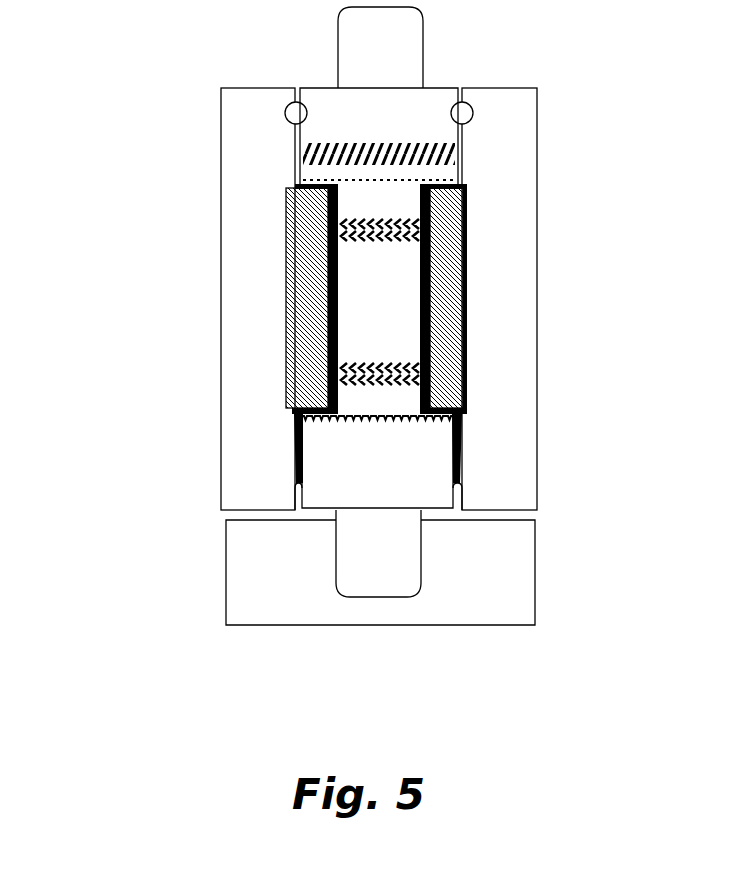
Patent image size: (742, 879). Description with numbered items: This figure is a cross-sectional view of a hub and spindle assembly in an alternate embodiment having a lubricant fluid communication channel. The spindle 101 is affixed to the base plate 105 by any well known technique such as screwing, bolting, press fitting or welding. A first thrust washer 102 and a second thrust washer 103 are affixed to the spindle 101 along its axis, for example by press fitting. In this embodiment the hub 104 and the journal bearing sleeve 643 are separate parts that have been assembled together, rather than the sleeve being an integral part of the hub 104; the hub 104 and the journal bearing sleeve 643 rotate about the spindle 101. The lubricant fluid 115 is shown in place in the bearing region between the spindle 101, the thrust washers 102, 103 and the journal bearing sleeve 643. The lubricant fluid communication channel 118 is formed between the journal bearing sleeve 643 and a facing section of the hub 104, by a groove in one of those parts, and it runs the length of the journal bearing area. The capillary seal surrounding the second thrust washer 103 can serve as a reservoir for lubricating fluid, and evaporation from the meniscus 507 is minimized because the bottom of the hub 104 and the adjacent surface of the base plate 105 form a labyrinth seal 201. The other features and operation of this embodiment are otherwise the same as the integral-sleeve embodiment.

The spindle 101 is at (400, 48).
The first thrust washer 102 is at (400, 121).
The second thrust washer 103 is at (398, 474).
The hub 104 is at (273, 147).
The base plate 105 is at (298, 596).
The lubricant fluid 115 is at (335, 337).
The lubricant fluid communication channel 118 is at (467, 252).
The labyrinth seal 201 is at (243, 513).
The meniscus 507 is at (295, 480).
The journal bearing sleeve 643 is at (305, 249).